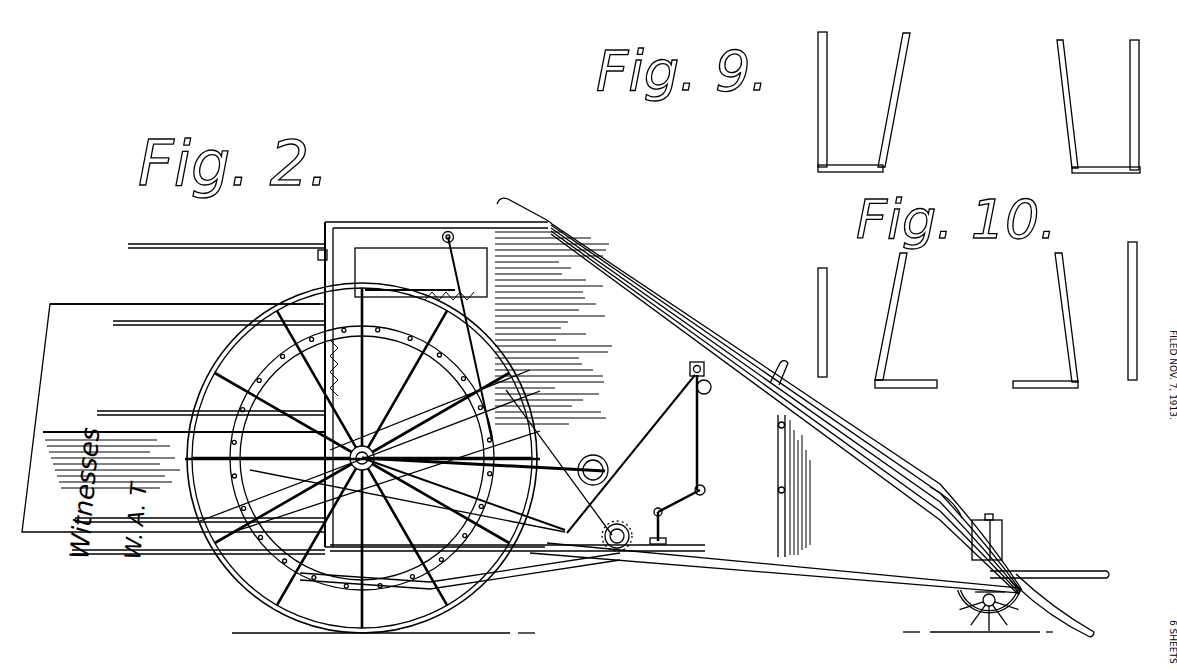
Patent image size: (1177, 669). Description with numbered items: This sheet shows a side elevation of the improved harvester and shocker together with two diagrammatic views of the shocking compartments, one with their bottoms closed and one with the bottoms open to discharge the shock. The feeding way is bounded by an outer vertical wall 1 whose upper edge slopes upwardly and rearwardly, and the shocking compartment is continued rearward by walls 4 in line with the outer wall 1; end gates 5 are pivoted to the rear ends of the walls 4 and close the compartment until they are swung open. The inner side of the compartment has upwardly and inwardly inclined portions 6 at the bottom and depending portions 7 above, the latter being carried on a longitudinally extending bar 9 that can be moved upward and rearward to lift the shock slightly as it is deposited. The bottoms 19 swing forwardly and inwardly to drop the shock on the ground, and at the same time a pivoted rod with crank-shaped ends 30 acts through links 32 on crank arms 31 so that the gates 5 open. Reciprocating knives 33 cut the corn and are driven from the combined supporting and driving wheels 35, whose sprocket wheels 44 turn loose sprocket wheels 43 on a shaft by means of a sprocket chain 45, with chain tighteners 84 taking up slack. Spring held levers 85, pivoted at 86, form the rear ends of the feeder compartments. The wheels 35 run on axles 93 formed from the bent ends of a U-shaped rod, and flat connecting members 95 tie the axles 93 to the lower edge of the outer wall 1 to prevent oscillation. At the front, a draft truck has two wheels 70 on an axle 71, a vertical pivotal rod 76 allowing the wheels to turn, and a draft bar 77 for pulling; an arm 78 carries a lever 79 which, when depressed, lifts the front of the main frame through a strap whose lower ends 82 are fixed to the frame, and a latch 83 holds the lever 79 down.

In FIG. 2, the outer vertical wall 1 is at (595, 370).
In FIG. 2, the walls 4 is at (462, 318).
In FIG. 2, the end gates 5 is at (134, 520).
In FIG. 9, the inclined portions 6 is at (893, 138).
In FIG. 10, the inclined portions 6 is at (898, 310).
In FIG. 2, the depending portions 7 is at (112, 338).
In FIG. 2, the longitudinally extending bar 9 is at (187, 291).
In FIG. 9, the bottoms 19 is at (855, 168).
In FIG. 10, the bottoms 19 is at (912, 383).
In FIG. 2, the crank-shaped ends 30 is at (596, 458).
In FIG. 2, the crank arms 31 is at (325, 443).
In FIG. 2, the links 32 is at (427, 473).
In FIG. 2, the knives 33 is at (40, 420).
In FIG. 2, the combined supporting and driving wheels 35 is at (447, 406).
In FIG. 2, the loose sprocket wheels 43 is at (628, 548).
In FIG. 2, the sprocket wheels 44 is at (480, 590).
In FIG. 2, the sprocket chain 45 is at (460, 575).
In FIG. 2, the wheels 70 is at (955, 610).
In FIG. 2, the axle 71 is at (1005, 628).
In FIG. 2, the vertical pivotal rod 76 is at (992, 513).
In FIG. 2, the draft bar 77 is at (670, 511).
In FIG. 2, the arm 78 is at (948, 498).
In FIG. 2, the lever 79 is at (862, 441).
In FIG. 2, the lower ends of strap 82 is at (1004, 538).
In FIG. 2, the latch 83 is at (778, 365).
In FIG. 2, the chain tighteners 84 is at (652, 500).
In FIG. 2, the spring held levers 85 is at (528, 313).
In FIG. 2, the pivot 86 is at (465, 290).
In FIG. 2, the axles 93 is at (330, 472).
In FIG. 2, the flat connecting members 95 is at (262, 600).